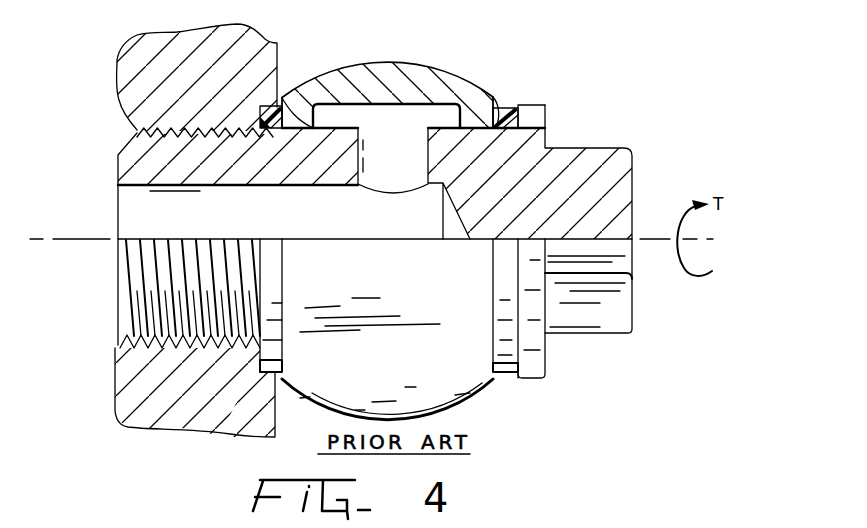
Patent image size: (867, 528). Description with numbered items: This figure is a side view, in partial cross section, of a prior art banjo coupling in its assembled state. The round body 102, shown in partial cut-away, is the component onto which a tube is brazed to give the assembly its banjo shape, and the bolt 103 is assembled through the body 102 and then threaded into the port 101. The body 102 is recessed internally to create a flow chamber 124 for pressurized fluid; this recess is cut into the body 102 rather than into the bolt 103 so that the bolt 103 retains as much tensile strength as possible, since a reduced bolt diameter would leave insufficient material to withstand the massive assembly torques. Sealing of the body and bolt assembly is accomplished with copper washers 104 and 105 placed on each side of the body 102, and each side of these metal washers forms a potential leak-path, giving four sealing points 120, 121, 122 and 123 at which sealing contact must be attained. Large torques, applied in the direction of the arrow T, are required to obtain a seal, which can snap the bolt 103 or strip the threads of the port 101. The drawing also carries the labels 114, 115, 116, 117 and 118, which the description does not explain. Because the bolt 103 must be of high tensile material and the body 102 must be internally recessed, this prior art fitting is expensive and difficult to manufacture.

The port 101 is at (180, 50).
The body 102 is at (304, 412).
The bolt 103 is at (598, 330).
The washer 104 is at (258, 368).
The washer 105 is at (507, 362).
The ball seat section 114 is at (355, 111).
The nut hex flat 115 is at (613, 262).
The nut flange 116 is at (535, 313).
The external thread 117 is at (143, 128).
The body shoulder 118 is at (152, 142).
The sealing point 120 is at (259, 110).
The sealing point 121 is at (304, 104).
The sealing point 122 is at (493, 114).
The sealing point 123 is at (526, 117).
The flow chamber 124 is at (400, 122).